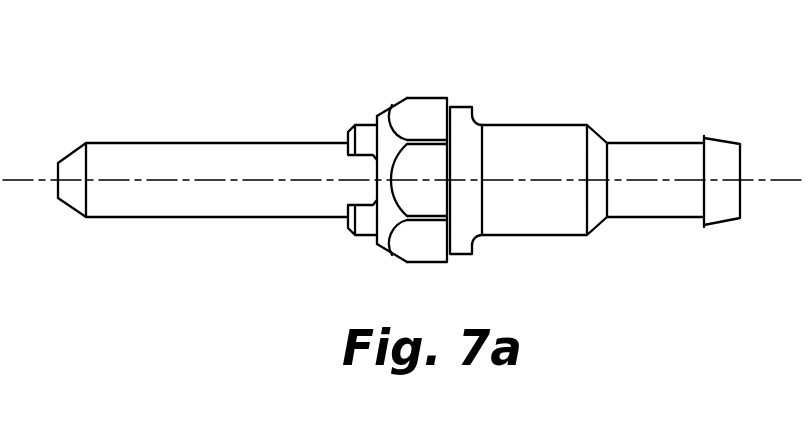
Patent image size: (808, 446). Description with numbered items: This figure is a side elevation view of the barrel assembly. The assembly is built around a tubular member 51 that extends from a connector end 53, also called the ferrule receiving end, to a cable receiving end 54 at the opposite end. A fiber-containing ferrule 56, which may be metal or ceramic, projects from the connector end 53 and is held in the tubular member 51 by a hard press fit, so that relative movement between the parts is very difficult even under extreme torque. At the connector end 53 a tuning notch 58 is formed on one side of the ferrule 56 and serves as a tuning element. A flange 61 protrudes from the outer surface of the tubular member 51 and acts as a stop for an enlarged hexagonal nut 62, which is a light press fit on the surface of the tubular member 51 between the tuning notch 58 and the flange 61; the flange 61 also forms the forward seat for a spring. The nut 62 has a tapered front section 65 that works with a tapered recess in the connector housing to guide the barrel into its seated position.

The tubular member 51 is at (555, 125).
The connector end 53 is at (368, 228).
The cable receiving end 54 is at (720, 138).
The ferrule 56 is at (203, 143).
The tuning notch 58 is at (360, 170).
The flange 61 is at (467, 108).
The hexagonal nut 62 is at (428, 98).
The tapered front section 65 is at (388, 117).